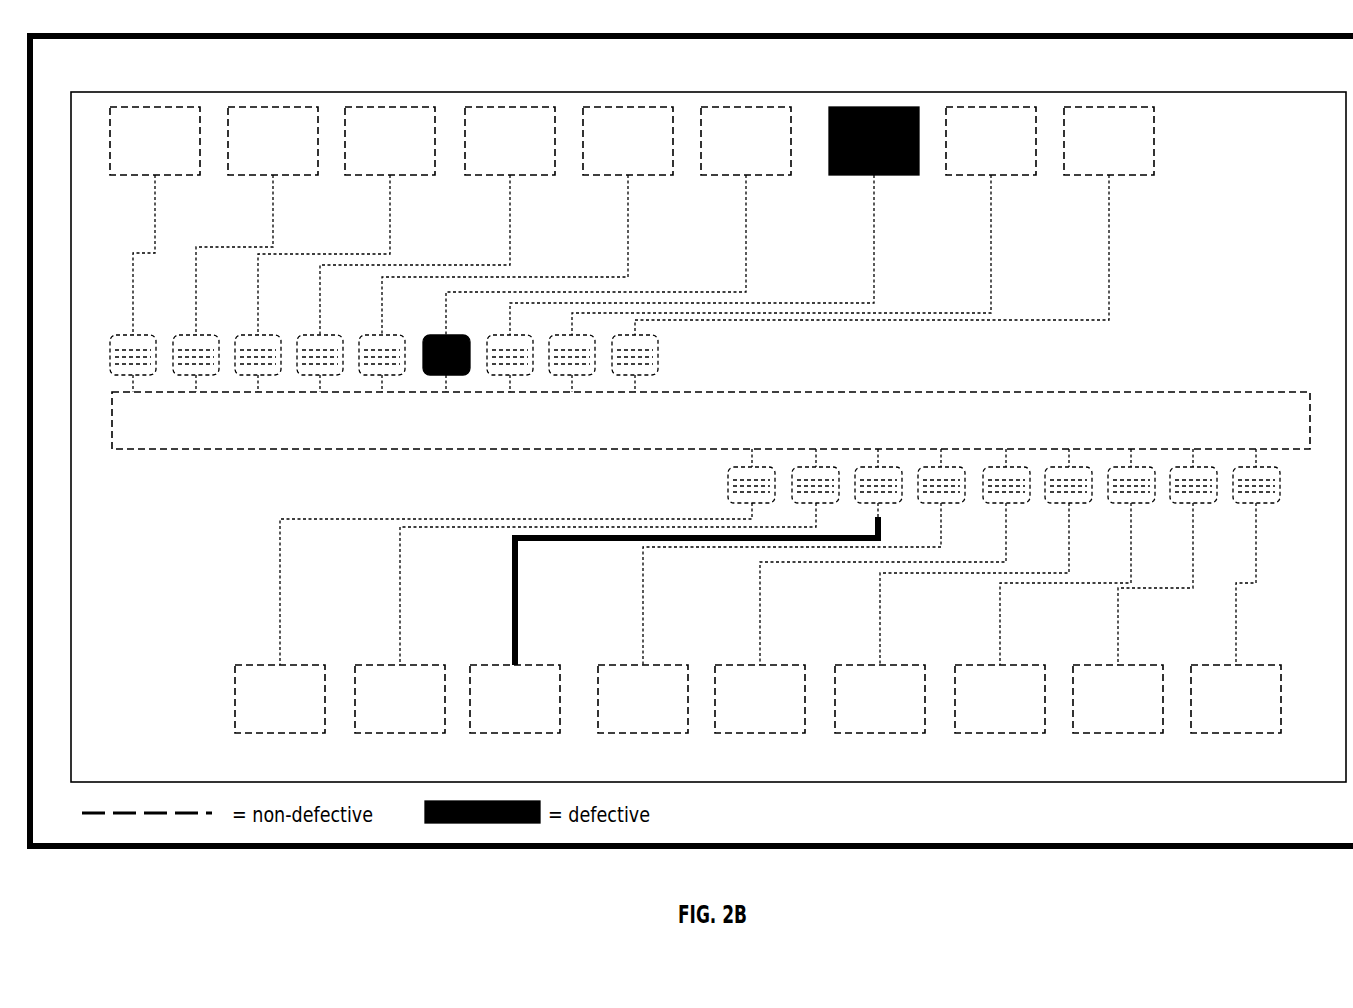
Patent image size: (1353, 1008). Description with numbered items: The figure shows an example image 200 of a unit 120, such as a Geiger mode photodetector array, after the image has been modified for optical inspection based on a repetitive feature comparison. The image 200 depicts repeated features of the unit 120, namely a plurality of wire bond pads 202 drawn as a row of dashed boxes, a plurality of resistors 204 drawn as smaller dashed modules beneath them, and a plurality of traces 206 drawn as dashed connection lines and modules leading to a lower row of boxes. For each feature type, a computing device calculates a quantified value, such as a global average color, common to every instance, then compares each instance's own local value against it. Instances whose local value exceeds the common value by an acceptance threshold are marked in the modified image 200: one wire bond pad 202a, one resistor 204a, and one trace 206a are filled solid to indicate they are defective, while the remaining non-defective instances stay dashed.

The image 200 is at (333, 28).
The unit 120 is at (226, 86).
The wire bond pads 202 is at (1038, 181).
The defective wire bond pad 202a is at (899, 184).
The resistors 204 is at (386, 378).
The defective resistor 204a is at (447, 385).
The traces 206 is at (394, 592).
The defective trace 206a is at (522, 630).